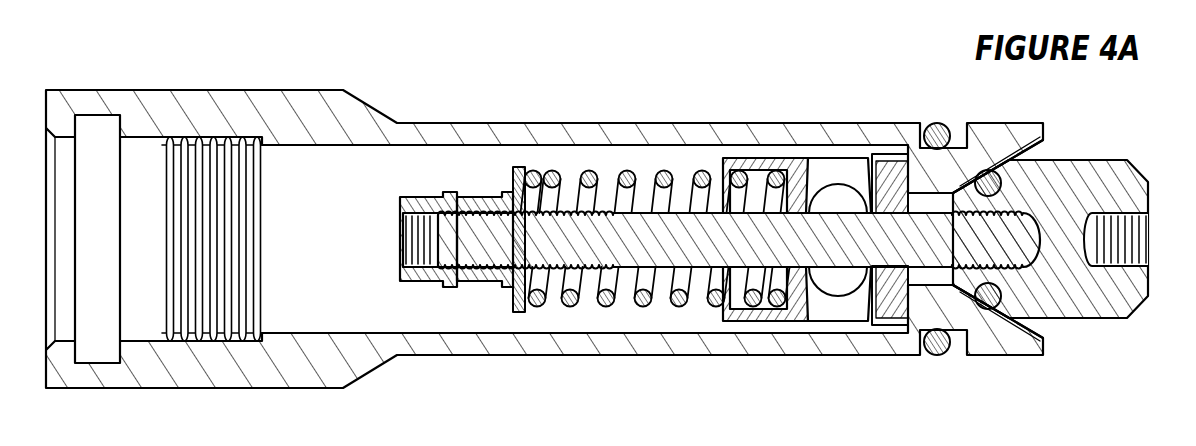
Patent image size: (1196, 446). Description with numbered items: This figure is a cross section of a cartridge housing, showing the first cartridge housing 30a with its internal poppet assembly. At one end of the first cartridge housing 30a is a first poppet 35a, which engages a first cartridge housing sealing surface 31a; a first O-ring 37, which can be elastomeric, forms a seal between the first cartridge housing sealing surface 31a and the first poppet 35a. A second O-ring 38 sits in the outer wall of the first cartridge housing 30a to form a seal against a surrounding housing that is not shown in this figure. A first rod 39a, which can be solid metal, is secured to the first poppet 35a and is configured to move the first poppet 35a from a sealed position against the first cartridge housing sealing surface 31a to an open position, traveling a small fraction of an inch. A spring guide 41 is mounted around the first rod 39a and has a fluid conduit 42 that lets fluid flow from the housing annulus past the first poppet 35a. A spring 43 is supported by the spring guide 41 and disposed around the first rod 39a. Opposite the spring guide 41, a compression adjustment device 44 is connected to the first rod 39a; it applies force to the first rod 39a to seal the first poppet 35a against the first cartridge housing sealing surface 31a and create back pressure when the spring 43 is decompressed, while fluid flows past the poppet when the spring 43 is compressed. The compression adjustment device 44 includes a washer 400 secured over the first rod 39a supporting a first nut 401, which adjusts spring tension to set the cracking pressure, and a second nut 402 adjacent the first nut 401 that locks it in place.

The first cartridge housing 30a is at (307, 90).
The first cartridge housing sealing surface 31a is at (1017, 154).
The first poppet 35a is at (1092, 160).
The first O-ring 37 is at (990, 300).
The second O-ring 38 is at (940, 124).
The first rod 39a is at (845, 268).
The spring guide 41 is at (755, 158).
The fluid conduit 42 is at (847, 158).
The spring 43 is at (629, 170).
The compression adjustment device 44 is at (483, 165).
The washer 400 is at (513, 311).
The first nut 401 is at (477, 283).
The second nut 402 is at (432, 283).